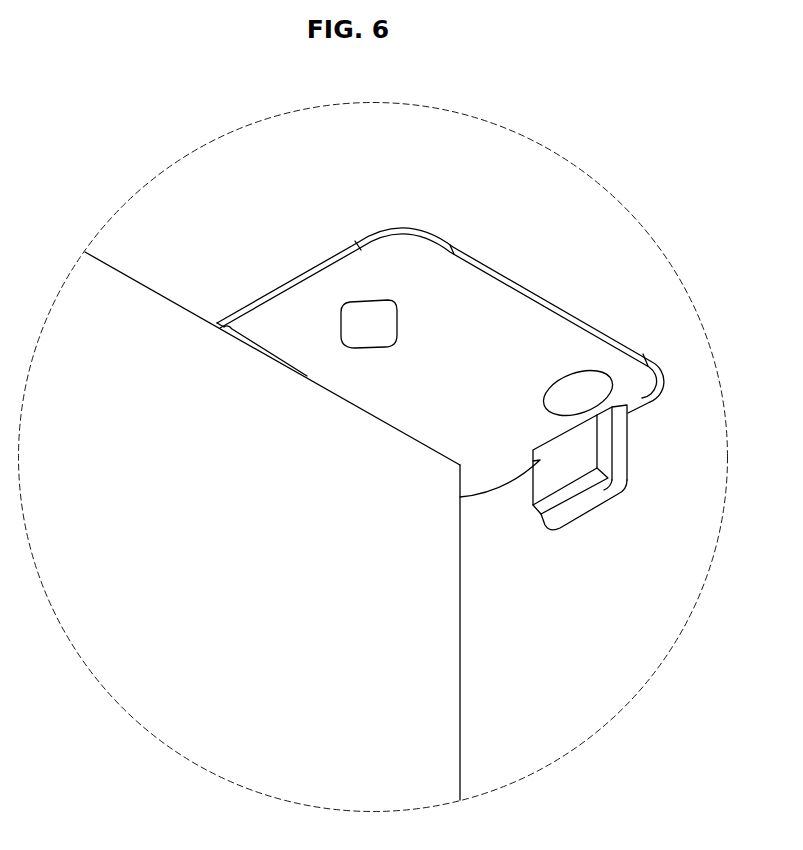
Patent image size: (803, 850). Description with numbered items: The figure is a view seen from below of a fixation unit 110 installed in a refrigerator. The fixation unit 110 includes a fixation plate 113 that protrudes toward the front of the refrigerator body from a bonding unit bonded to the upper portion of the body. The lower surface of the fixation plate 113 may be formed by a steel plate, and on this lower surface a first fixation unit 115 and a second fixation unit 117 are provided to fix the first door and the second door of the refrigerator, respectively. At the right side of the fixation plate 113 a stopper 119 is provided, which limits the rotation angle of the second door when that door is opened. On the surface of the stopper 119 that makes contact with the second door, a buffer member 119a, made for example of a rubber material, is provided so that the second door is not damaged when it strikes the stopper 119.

The fixation unit 110 is at (380, 233).
The fixation plate 113 is at (464, 316).
The first fixation unit 115 is at (360, 328).
The second fixation unit 117 is at (580, 390).
The stopper 119 is at (628, 441).
The buffer member 119a is at (572, 468).